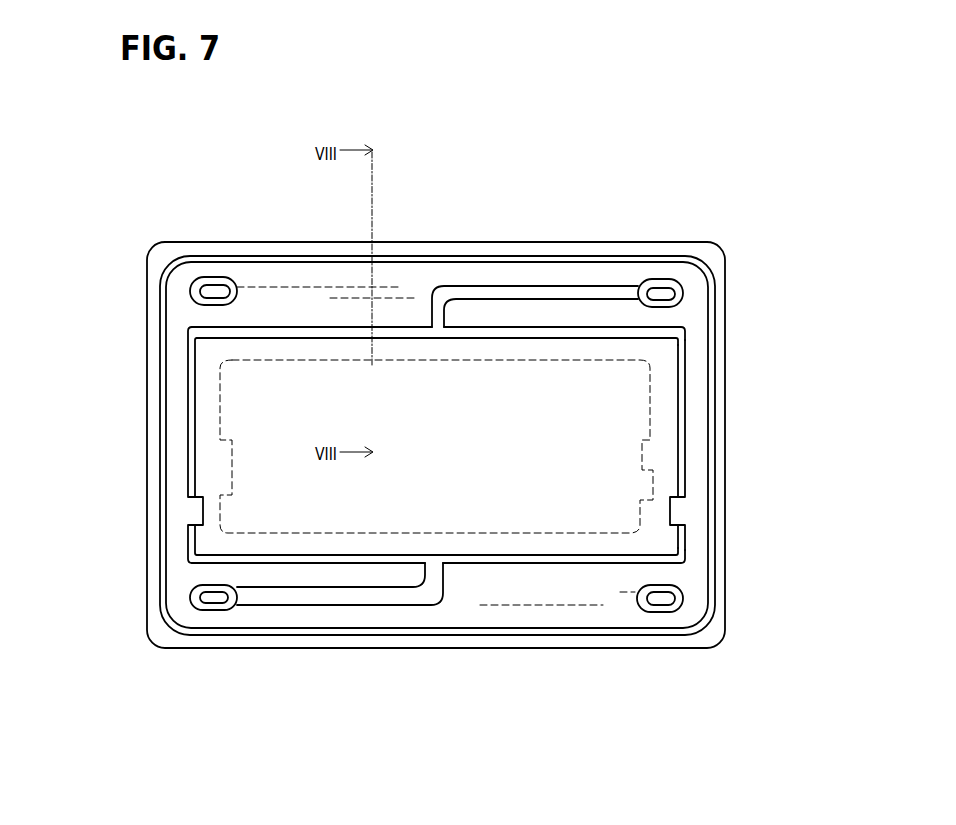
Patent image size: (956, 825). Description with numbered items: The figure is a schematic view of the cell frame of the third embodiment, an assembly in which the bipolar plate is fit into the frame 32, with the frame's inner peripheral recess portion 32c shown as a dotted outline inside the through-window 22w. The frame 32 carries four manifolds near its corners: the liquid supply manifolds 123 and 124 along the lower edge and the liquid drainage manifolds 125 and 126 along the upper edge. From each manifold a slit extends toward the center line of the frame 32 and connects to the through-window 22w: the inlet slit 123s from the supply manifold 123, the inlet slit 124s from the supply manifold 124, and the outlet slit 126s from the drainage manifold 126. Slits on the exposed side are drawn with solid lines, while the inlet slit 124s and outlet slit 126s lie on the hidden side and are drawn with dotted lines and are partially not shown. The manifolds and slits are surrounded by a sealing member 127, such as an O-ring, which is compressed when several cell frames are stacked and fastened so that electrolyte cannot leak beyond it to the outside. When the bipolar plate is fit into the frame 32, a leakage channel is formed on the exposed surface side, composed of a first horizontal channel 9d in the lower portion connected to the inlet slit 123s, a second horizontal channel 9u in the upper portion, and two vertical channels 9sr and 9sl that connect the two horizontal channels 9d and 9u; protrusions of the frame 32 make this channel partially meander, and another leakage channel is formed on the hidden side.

The frame 32 is at (160, 242).
The sealing member 127 is at (712, 500).
The second horizontal channel 9u is at (490, 357).
The first horizontal channel 9d is at (480, 535).
The vertical channel 9sl is at (222, 395).
The vertical channel 9sr is at (650, 402).
The inner peripheral recess portion 32c is at (462, 358).
The liquid drainage manifold 126 is at (212, 290).
The outlet slit 126s is at (288, 290).
The liquid drainage manifold 125 is at (655, 290).
The inlet slit 124s is at (550, 290).
The liquid supply manifold 123 is at (210, 600).
The inlet slit 123s is at (290, 600).
The liquid supply manifold 124 is at (660, 606).
The through-window 22w is at (597, 503).